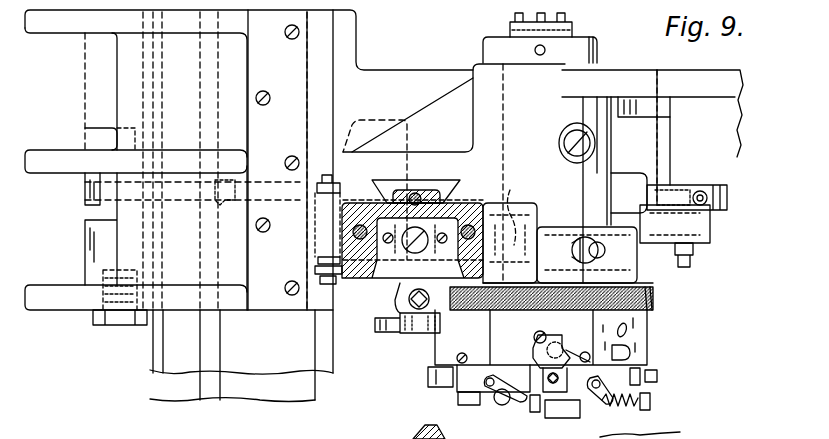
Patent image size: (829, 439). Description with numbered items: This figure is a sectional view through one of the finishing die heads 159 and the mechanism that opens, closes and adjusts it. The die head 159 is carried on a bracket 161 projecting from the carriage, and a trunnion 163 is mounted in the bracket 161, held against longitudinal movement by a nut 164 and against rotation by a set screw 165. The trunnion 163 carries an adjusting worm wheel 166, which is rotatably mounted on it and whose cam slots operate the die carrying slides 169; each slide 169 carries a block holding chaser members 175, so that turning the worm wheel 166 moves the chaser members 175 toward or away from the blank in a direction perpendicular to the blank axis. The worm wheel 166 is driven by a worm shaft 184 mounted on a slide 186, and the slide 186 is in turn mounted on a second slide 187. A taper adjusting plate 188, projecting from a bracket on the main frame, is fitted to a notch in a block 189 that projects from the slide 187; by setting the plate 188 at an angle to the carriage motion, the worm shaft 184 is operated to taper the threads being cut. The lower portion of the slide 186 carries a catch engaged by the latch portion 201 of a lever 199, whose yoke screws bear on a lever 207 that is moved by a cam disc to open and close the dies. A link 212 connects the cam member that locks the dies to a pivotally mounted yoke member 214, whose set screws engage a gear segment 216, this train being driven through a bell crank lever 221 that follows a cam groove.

The finishing die head 159 is at (695, 367).
The bracket 161 is at (703, 72).
The trunnion 163 is at (470, 77).
The nut 164 is at (597, 47).
The set screw 165 is at (570, 125).
The adjusting worm wheel 166 is at (655, 297).
The die carrying slide 169 is at (538, 362).
The chaser member 175 is at (535, 410).
The worm shaft 184 is at (416, 310).
The slide 186 is at (383, 270).
The second slide 187 is at (437, 180).
The taper adjusting plate 188 is at (325, 50).
The block 189 is at (322, 249).
The lever 199 is at (88, 188).
The latch portion 201 is at (417, 140).
The lever 207 is at (88, 215).
The link 212 is at (568, 230).
The yoke member 214 is at (712, 243).
The gear segment 216 is at (730, 199).
The bell crank lever 221 is at (452, 430).